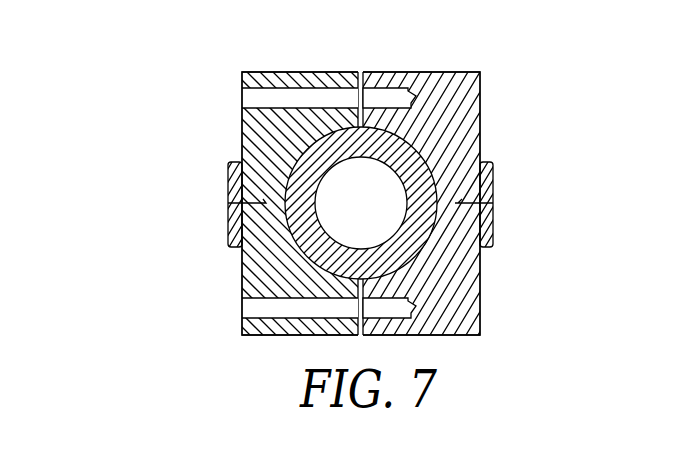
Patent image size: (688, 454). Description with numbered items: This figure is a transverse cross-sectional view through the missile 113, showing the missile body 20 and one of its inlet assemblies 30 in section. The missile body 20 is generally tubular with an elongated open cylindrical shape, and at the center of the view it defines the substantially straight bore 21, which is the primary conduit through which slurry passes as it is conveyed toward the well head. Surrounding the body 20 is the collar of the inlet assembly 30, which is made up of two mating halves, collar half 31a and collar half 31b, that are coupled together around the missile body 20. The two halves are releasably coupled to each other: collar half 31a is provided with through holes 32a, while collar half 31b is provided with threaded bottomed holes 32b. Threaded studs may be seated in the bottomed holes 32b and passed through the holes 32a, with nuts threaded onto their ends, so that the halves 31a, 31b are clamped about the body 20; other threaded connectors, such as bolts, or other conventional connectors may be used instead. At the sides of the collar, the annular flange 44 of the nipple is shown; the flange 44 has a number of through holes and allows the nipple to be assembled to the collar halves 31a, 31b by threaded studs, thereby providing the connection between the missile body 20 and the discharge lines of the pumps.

The inlet assembly 30 is at (506, 38).
The missile 113 is at (130, 132).
The missile body 20 is at (412, 165).
The bore 21 is at (377, 215).
The collar half 31a is at (253, 272).
The collar half 31b is at (468, 270).
The through holes 32a is at (242, 97).
The threaded bottomed holes 32b is at (402, 95).
The annular flange 44 is at (230, 166).